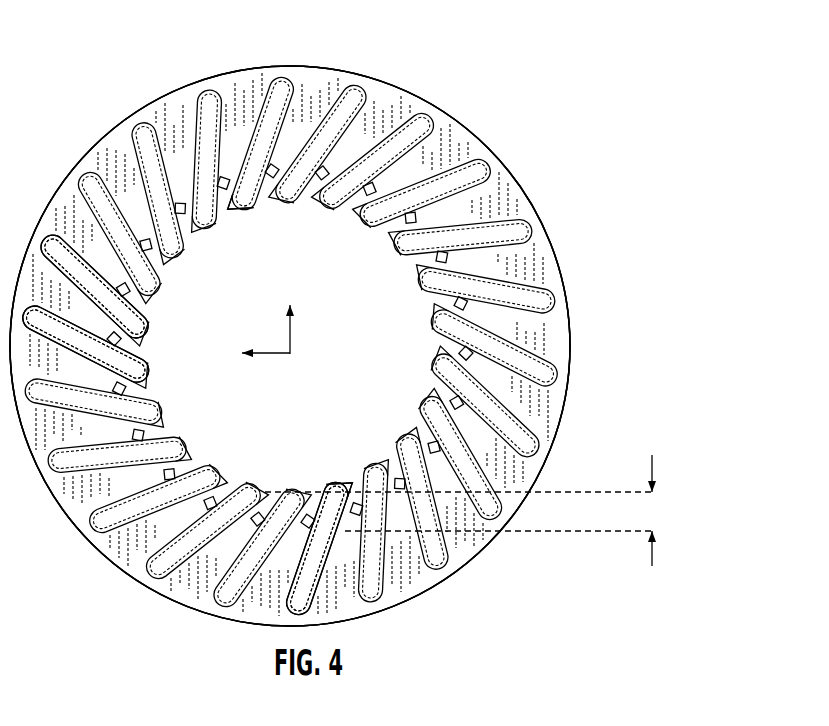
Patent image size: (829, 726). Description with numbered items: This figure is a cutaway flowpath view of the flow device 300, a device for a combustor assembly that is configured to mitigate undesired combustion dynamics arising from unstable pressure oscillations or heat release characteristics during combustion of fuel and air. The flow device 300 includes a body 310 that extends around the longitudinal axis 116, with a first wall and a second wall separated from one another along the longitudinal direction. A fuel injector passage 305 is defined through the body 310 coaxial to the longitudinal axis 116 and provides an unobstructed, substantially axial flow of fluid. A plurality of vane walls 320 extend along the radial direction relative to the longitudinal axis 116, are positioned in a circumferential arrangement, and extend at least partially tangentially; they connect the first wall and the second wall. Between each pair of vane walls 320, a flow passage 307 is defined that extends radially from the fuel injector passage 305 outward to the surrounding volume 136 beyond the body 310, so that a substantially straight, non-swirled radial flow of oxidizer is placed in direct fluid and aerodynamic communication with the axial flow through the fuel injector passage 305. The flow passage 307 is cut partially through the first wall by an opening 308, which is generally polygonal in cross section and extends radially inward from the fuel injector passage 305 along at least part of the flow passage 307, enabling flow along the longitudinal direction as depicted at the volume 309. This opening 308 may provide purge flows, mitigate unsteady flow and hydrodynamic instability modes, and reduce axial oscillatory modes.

The flow device 300 is at (545, 112).
The body 310 is at (541, 178).
The surrounding volume 136 is at (318, 60).
The vane walls 320 is at (141, 324).
The flow passage 307 is at (255, 209).
The opening 308 is at (321, 488).
The fuel injector passage 305 is at (318, 437).
The longitudinal axis 116 is at (291, 355).
The volume 309 is at (653, 559).